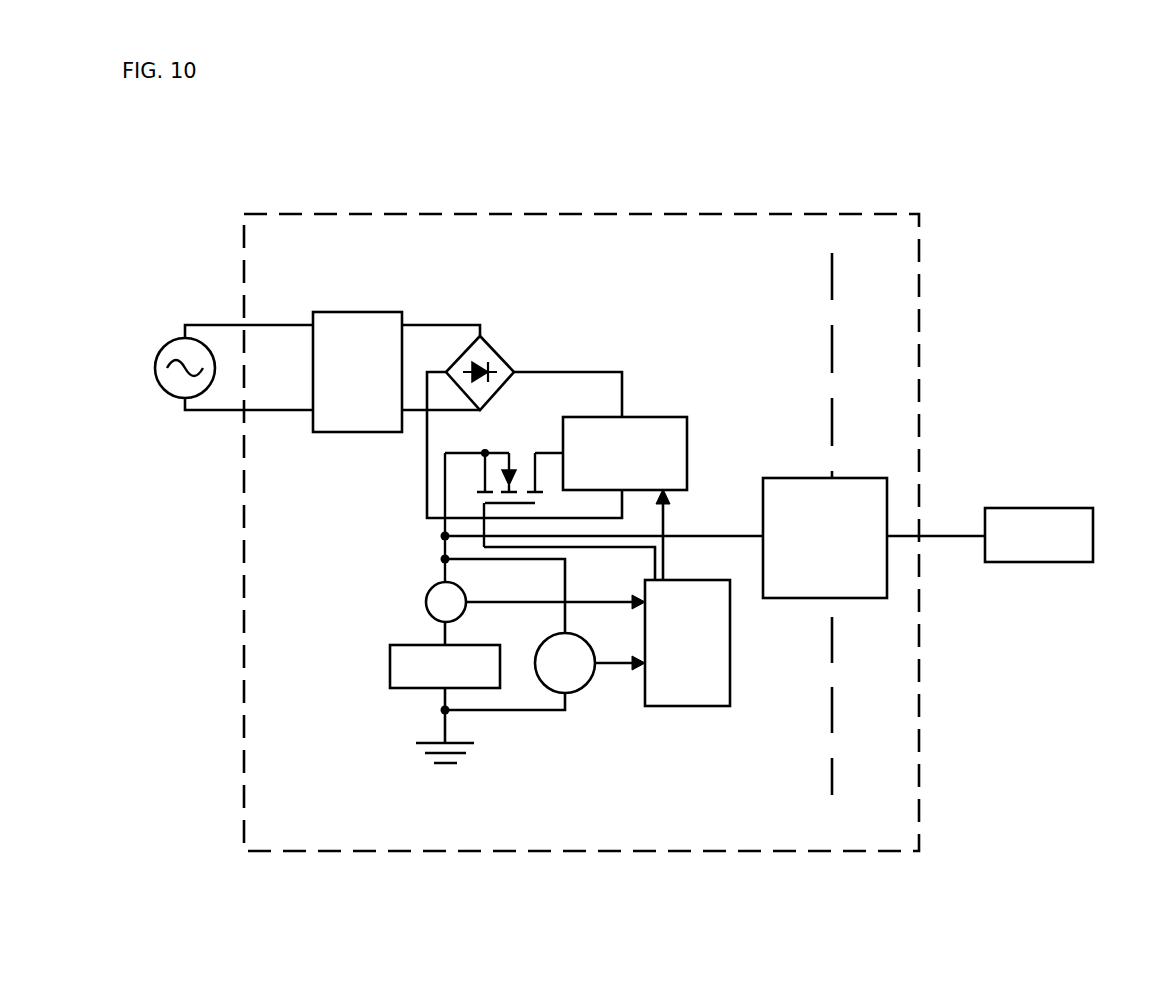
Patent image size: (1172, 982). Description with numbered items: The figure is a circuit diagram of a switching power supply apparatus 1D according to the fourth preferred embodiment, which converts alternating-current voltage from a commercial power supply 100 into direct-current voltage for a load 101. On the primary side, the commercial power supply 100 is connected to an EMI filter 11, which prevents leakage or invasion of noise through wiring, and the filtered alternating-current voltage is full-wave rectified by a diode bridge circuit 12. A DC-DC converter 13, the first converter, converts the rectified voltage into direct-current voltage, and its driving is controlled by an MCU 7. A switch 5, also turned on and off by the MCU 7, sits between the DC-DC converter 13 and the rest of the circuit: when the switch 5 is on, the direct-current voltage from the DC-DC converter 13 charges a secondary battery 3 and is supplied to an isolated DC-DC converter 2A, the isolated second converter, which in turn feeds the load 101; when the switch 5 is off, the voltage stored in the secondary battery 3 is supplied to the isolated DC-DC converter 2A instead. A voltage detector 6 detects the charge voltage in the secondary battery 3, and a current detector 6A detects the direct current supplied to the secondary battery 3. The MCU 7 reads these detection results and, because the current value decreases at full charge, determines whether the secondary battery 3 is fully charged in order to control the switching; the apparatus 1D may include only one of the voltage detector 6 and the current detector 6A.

The switching power supply apparatus 1D is at (279, 213).
The commercial power supply 100 is at (162, 346).
The EMI filter 11 is at (334, 311).
The diode bridge circuit 12 is at (484, 342).
The DC-DC converter 13 is at (689, 417).
The switch 5 is at (522, 438).
The isolated DC-DC converter 2A is at (765, 478).
The load 101 is at (1093, 508).
The current detector 6A is at (429, 592).
The secondary battery 3 is at (397, 645).
The voltage detector 6 is at (587, 685).
The MCU 7 is at (730, 706).